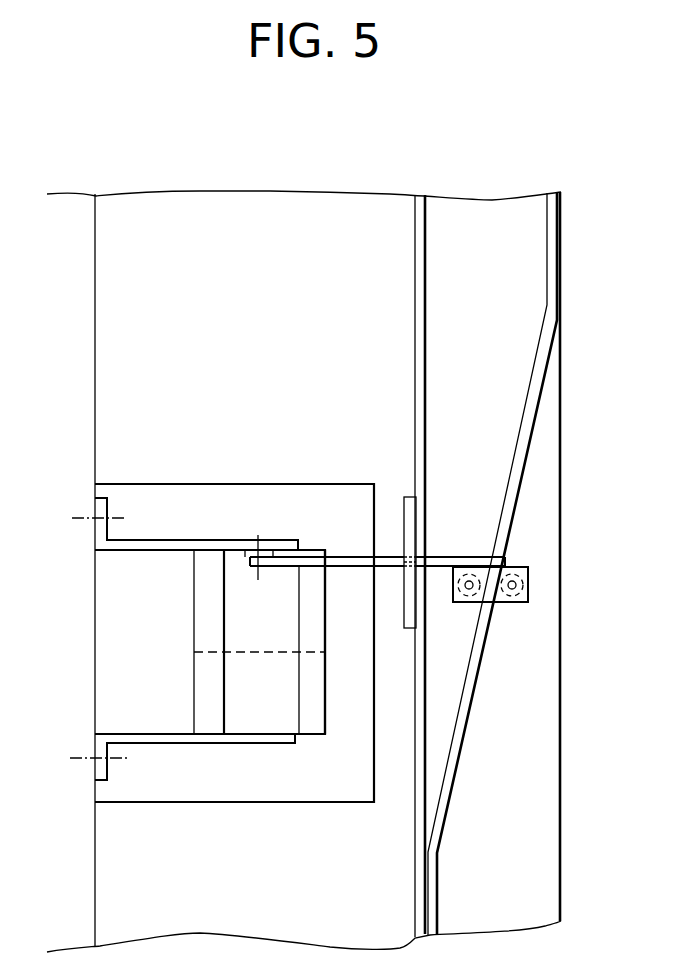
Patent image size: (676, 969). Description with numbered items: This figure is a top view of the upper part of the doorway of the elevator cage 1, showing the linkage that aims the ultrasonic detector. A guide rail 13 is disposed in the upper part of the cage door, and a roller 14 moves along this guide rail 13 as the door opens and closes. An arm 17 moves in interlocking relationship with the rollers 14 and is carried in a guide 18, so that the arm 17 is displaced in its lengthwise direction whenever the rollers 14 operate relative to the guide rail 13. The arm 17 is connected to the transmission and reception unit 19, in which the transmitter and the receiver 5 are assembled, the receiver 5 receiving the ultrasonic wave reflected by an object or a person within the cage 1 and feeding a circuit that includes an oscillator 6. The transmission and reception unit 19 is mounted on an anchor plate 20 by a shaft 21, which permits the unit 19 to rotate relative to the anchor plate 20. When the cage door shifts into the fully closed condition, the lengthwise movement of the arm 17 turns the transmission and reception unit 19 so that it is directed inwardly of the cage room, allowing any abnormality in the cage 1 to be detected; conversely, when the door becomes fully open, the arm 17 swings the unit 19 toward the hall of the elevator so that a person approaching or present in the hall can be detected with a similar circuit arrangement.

The cage 1 is at (82, 325).
The receiver 5 is at (194, 603).
The oscillator 6 is at (194, 690).
The guide rail 13 is at (522, 410).
The roller 14 is at (458, 571).
The arm 17 is at (346, 557).
The guide 18 is at (408, 497).
The transmission and reception unit 19 is at (325, 692).
The anchor plate 20 is at (160, 736).
The shaft 21 is at (262, 578).